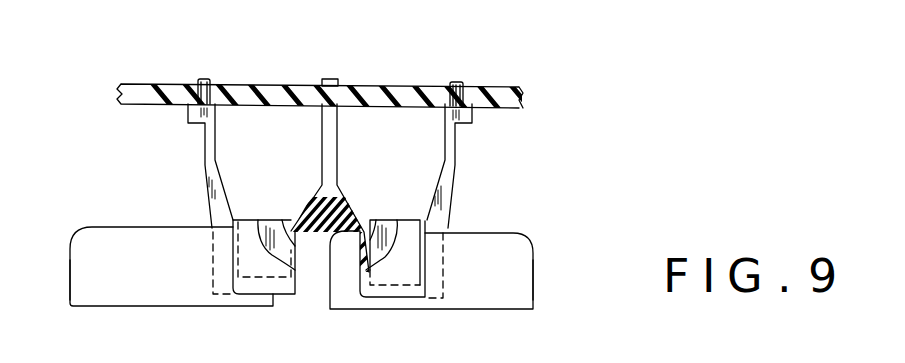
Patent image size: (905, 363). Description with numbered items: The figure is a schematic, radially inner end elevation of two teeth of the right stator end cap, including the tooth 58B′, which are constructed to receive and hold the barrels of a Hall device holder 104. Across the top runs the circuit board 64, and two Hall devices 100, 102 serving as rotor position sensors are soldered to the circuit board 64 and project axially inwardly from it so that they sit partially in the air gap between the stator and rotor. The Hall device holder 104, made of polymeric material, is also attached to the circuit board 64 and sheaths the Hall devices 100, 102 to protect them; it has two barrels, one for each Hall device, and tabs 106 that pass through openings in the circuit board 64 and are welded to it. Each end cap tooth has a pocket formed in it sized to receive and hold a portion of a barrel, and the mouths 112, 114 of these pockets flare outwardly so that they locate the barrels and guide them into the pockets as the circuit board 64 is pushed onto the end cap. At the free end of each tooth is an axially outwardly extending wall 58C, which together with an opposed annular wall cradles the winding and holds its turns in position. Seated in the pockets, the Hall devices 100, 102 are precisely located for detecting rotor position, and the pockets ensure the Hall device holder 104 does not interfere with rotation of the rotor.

The circuit board 64 is at (518, 85).
The tabs 106 is at (205, 78).
The Hall device holder 104 is at (458, 166).
The Hall device 102 is at (277, 224).
The Hall device 100 is at (383, 227).
The mouth of pocket 114 is at (232, 228).
The mouth of pocket 112 is at (428, 226).
The tooth of right stator end cap 58B′ is at (528, 287).
The axially outwardly extending wall 58C is at (76, 286).